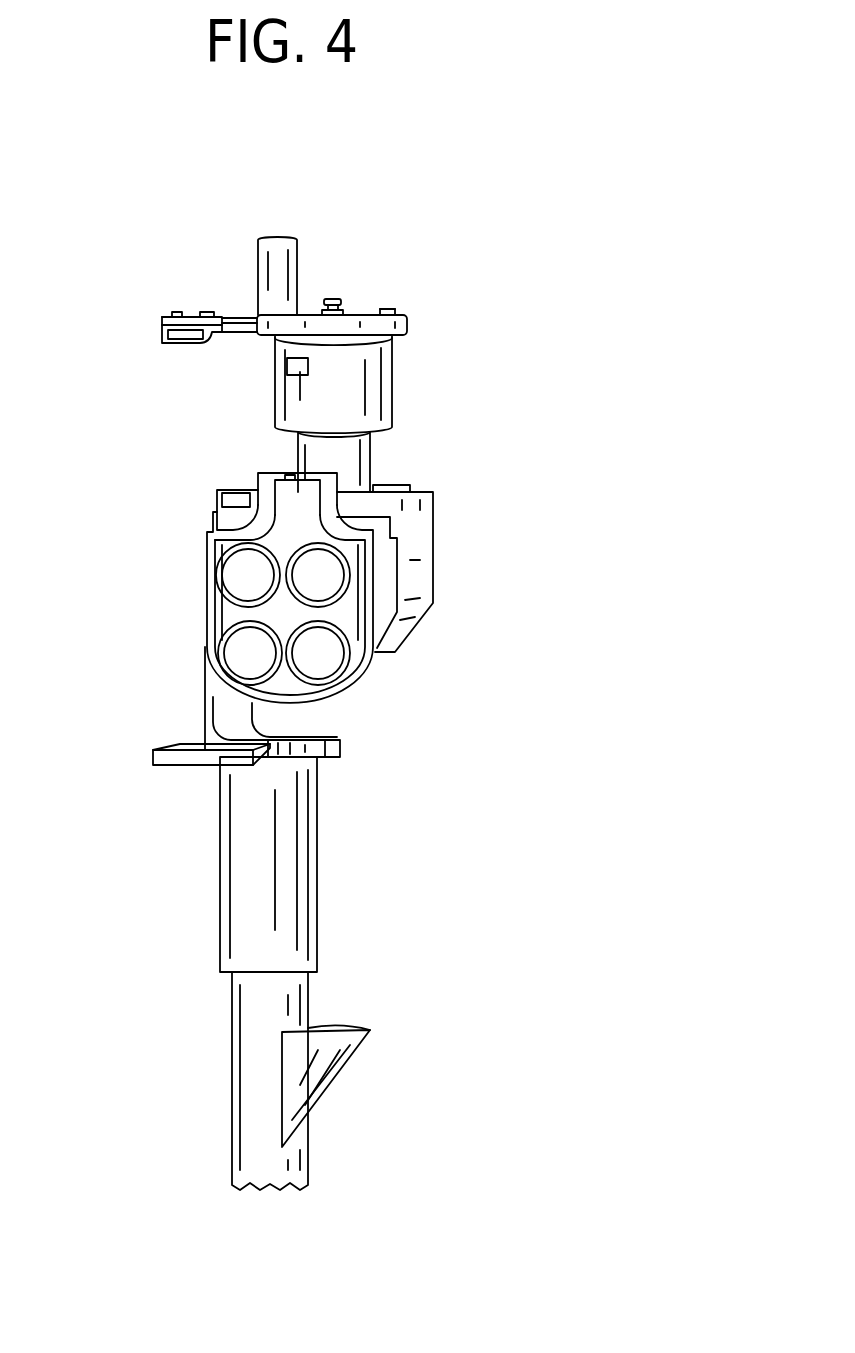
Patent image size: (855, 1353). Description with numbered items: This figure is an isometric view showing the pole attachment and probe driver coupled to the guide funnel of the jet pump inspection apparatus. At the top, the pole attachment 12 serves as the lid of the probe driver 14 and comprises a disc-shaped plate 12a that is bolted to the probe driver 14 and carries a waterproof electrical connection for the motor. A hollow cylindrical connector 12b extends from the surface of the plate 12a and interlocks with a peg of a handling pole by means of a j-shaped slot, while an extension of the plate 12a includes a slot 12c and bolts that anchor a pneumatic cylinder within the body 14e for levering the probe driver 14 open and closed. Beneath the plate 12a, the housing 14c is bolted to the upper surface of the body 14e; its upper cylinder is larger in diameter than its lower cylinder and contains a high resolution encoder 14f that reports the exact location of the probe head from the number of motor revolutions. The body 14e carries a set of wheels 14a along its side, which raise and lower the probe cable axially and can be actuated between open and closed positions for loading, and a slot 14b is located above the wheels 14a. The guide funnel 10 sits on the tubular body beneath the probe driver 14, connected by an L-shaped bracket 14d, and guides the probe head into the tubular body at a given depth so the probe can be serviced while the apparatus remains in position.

The guide funnel 10 is at (370, 922).
The pole attachment 12 is at (408, 213).
The plate 12a is at (353, 298).
The connector 12b is at (305, 237).
The slot 12c is at (178, 355).
The probe driver 14 is at (412, 410).
The set of wheels 14a is at (188, 573).
The slot 14b is at (245, 477).
The housing 14c is at (400, 428).
The L-shaped bracket 14d is at (347, 742).
The body 14e is at (442, 583).
The encoder 14f is at (287, 362).